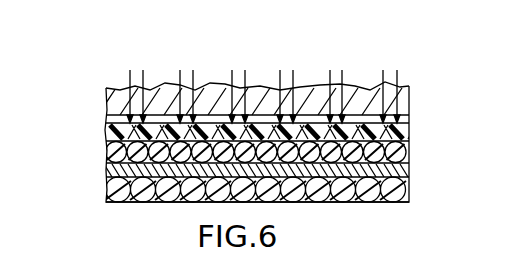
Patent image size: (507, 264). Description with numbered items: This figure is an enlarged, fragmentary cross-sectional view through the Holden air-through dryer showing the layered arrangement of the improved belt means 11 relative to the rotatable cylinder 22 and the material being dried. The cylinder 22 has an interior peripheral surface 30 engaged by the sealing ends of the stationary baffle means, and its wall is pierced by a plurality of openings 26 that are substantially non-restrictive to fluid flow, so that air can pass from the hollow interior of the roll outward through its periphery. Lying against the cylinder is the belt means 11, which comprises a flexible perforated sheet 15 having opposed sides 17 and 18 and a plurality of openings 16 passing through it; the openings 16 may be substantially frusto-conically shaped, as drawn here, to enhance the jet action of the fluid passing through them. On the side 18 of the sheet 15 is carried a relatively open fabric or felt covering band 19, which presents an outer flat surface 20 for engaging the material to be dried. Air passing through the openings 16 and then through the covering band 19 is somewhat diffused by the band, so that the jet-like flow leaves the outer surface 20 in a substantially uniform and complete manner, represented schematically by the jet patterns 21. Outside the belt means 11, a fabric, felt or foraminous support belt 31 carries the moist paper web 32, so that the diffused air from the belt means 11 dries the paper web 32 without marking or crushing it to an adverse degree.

The belt means 11 is at (414, 129).
The flexible perforated sheet 15 is at (114, 122).
The openings 16 is at (312, 127).
The side 17 is at (409, 118).
The side 18 is at (411, 143).
The covering band 19 is at (112, 151).
The outer flat surface 20 is at (411, 172).
The jet patterns 21 is at (113, 178).
The cylinder 22 is at (410, 86).
The openings 26 is at (357, 84).
The interior peripheral surface 30 is at (156, 120).
The support belt 31 is at (352, 203).
The paper web 32 is at (273, 202).